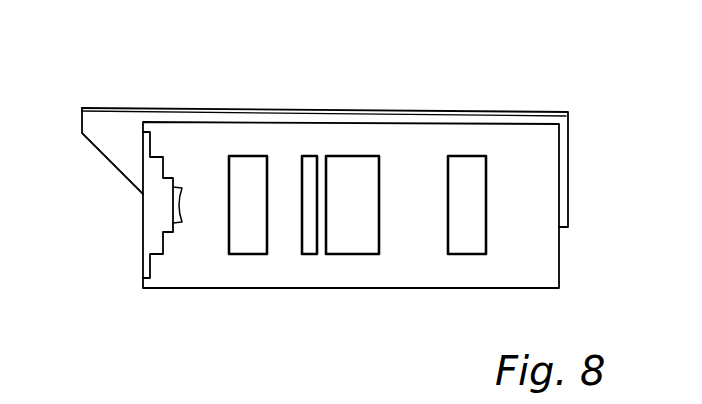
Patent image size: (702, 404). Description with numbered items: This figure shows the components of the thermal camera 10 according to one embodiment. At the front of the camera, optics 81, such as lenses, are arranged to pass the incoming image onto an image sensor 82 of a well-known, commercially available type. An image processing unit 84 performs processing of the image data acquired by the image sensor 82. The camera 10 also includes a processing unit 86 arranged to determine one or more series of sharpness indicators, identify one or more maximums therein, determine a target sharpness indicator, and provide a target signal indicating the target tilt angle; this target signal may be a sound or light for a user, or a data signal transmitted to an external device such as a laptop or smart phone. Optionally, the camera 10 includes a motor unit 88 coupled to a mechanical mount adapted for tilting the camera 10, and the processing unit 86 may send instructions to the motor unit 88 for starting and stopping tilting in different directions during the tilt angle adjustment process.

The thermal camera 10 is at (546, 73).
The optics 81 is at (173, 208).
The image sensor 82 is at (248, 240).
The image processing unit 84 is at (310, 163).
The processing unit 86 is at (352, 243).
The motor unit 88 is at (462, 168).